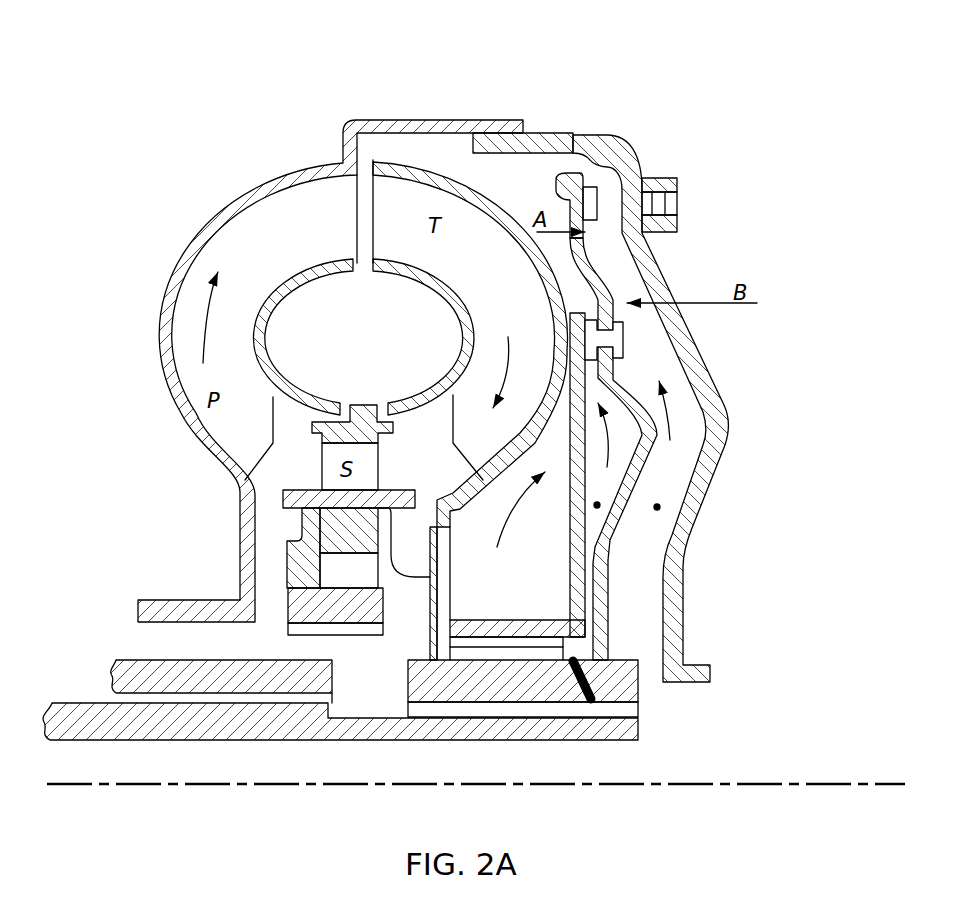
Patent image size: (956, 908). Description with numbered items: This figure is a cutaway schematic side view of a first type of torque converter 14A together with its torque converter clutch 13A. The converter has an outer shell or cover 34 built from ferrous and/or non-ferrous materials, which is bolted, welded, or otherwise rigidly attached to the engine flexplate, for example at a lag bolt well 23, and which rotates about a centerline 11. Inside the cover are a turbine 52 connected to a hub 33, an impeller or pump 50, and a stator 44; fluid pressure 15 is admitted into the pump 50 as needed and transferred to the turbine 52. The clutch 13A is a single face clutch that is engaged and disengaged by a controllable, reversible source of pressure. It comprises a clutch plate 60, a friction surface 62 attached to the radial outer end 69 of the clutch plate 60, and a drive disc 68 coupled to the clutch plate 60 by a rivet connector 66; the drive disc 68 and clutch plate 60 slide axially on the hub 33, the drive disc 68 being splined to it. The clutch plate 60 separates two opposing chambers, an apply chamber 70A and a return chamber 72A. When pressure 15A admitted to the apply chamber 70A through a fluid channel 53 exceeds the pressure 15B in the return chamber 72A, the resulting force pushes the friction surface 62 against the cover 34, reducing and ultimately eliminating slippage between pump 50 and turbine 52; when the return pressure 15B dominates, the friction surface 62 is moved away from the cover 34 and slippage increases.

The centerline 11 is at (787, 783).
The torque converter clutch 13A is at (524, 522).
The torque converter 14A is at (560, 92).
The fluid pressure 15 is at (200, 317).
The apply chamber pressure 15A is at (607, 447).
The return chamber pressure 15B is at (672, 438).
The lag bolt well 23 is at (663, 183).
The hub 33 is at (622, 683).
The cover 34 is at (627, 147).
The stator 44 is at (358, 457).
The pump 50 is at (273, 225).
The turbine 52 is at (487, 283).
The fluid channel 53 is at (573, 690).
The clutch plate 60 is at (652, 433).
The friction surface 62 is at (590, 207).
The rivet connector 66 is at (610, 340).
The drive disc 68 is at (587, 475).
The radial outer end 69 is at (570, 173).
The apply chamber 70A is at (597, 505).
The return chamber 72A is at (657, 507).